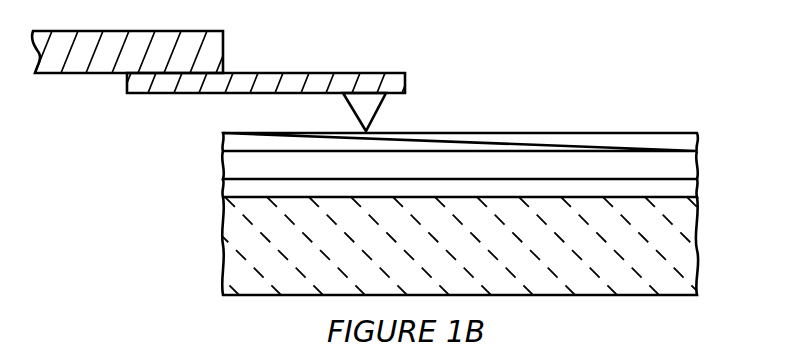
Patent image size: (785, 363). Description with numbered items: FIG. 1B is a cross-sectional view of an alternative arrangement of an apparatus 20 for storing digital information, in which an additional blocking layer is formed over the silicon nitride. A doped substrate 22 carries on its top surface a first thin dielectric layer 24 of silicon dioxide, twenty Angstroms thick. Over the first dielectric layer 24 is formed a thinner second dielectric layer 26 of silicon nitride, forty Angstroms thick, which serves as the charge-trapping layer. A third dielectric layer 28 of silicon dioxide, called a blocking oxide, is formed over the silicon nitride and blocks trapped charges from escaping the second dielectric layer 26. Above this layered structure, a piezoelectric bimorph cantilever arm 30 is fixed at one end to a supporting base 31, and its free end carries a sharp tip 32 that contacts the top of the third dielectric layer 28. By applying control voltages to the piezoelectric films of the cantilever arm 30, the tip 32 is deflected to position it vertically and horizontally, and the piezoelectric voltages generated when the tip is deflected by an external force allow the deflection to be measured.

The apparatus for storing digital information 20 is at (491, 40).
The doped substrate 22 is at (224, 245).
The first thin dielectric layer 24 is at (224, 196).
The second dielectric layer 26 is at (224, 166).
The third dielectric layer 28 is at (224, 148).
The piezoelectric bimorph cantilever arm 30 is at (353, 73).
The supporting base 31 is at (224, 57).
The sharp tip 32 is at (378, 109).